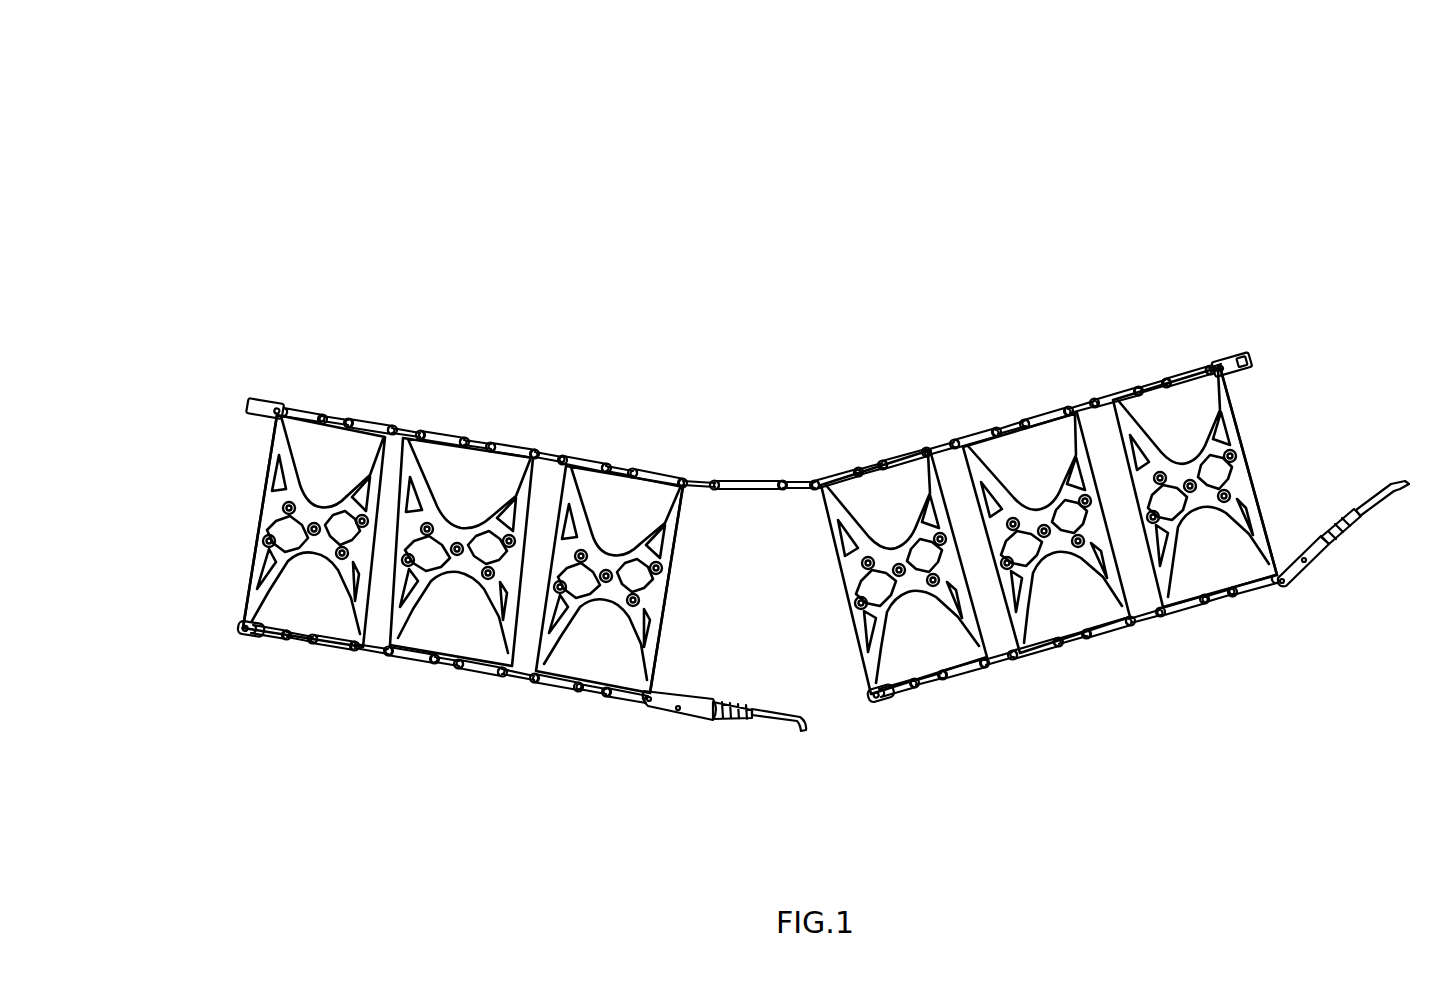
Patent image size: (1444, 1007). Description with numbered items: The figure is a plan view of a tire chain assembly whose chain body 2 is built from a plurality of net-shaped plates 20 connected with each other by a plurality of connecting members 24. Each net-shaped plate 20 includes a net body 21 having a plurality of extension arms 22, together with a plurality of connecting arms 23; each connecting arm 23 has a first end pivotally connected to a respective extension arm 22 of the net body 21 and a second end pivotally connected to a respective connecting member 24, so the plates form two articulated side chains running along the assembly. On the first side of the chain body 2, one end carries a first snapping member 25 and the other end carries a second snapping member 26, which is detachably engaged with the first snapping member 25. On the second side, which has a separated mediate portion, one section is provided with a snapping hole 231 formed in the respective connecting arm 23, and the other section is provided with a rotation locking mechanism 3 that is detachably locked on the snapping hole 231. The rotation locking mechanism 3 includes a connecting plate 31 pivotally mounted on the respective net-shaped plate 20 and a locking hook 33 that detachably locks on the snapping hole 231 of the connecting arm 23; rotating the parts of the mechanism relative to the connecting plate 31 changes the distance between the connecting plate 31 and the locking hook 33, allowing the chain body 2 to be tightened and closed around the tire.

The chain body 2 is at (1348, 186).
The net-shaped plate 20 is at (250, 519).
The net body 21 is at (1246, 483).
The extension arm 22 is at (270, 441).
The connecting arm 23 is at (300, 413).
The connecting member 24 is at (517, 682).
The snapping hole 231 is at (243, 640).
The first snapping member 25 is at (247, 404).
The second snapping member 26 is at (1225, 355).
The rotation locking mechanism 3 is at (695, 729).
The connecting plate 31 is at (668, 718).
The locking hook 33 is at (774, 722).